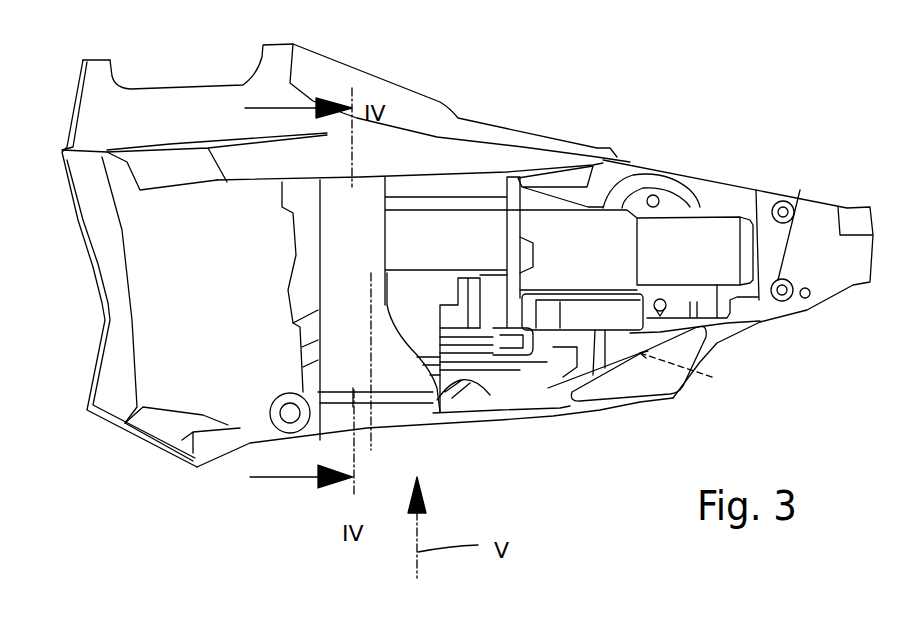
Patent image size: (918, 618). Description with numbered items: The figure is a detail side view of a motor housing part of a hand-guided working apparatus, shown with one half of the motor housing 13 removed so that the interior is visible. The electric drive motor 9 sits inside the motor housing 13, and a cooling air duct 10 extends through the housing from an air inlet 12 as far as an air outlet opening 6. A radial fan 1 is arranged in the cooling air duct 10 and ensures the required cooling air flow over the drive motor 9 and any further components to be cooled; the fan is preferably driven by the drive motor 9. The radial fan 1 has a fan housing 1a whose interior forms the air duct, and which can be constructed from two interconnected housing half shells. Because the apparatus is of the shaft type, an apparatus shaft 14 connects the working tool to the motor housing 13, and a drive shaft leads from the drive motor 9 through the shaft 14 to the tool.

The radial fan 1 is at (320, 310).
The fan housing 1a is at (390, 203).
The air outlet opening 6 is at (390, 427).
The electric drive motor 9 is at (427, 222).
The cooling air duct 10 is at (433, 275).
The air inlet 12 is at (687, 382).
The motor housing 13 is at (104, 310).
The apparatus shaft 14 is at (847, 207).